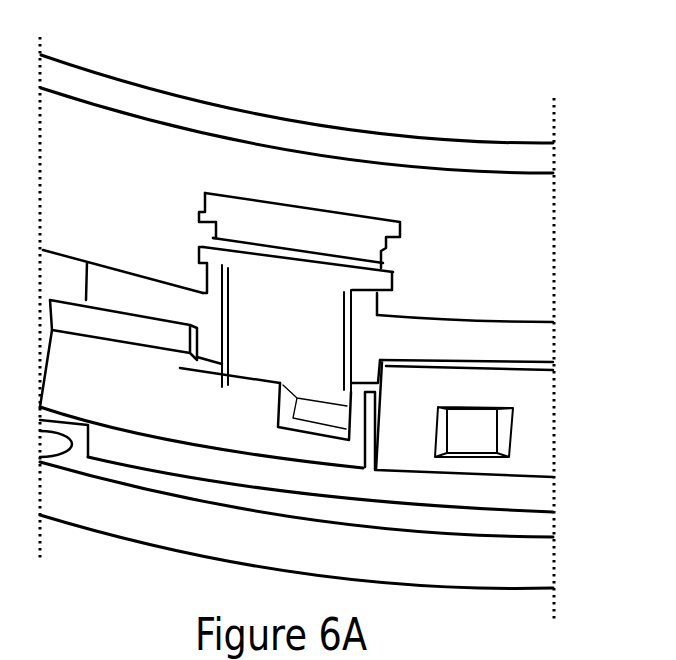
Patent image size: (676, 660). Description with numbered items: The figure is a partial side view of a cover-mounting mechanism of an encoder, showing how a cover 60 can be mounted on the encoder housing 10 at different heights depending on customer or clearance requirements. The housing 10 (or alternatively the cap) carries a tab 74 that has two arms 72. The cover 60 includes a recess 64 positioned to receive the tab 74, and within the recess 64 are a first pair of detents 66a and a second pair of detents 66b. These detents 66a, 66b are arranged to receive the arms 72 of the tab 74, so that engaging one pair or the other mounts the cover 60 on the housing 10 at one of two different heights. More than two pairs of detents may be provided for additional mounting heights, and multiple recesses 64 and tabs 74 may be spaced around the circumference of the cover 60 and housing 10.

The encoder housing 10 is at (189, 542).
The cover 60 is at (300, 92).
The recess 64 is at (317, 238).
The first pair of detents 66a is at (205, 203).
The second pair of detents 66b is at (200, 246).
The arms 72 is at (387, 291).
The tab 74 is at (328, 333).